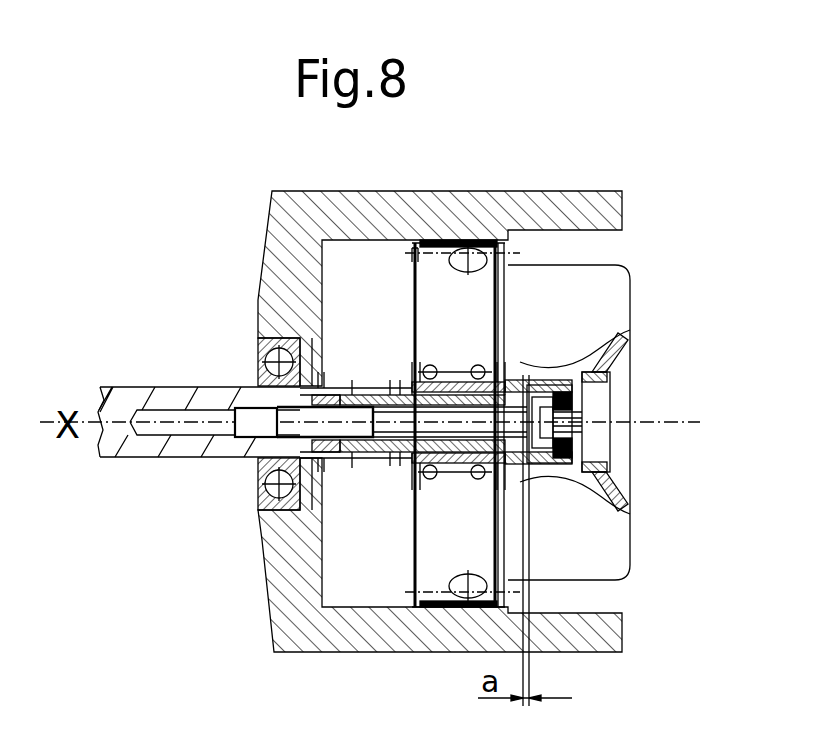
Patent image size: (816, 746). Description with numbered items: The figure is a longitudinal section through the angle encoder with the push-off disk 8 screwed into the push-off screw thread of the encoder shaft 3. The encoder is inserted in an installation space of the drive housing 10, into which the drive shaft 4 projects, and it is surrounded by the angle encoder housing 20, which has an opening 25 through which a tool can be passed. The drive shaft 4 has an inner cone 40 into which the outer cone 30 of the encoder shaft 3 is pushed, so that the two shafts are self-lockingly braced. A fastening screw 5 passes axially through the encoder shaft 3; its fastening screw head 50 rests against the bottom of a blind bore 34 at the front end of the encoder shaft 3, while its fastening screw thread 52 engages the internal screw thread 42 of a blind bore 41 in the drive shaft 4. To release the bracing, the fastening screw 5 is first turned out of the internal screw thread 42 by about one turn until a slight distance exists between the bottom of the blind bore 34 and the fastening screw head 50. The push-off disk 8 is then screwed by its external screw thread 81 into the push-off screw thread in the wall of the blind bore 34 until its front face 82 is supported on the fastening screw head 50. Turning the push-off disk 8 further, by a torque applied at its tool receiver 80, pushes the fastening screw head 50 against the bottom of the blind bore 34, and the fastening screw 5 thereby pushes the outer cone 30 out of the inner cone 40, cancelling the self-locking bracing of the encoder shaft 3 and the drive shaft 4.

The drive housing 10 is at (606, 214).
The angle encoder housing 20 is at (606, 293).
The opening 25 is at (602, 400).
The external screw thread 81 is at (600, 345).
The front face 82 is at (584, 410).
The tool receiver 80 is at (584, 432).
The push-off disk 8 is at (574, 444).
The drive shaft 4 is at (178, 457).
The blind bore 41 is at (160, 415).
The internal screw thread 42 is at (255, 445).
The fastening screw thread 52 is at (268, 403).
The inner cone 40 is at (332, 452).
The encoder shaft 3 is at (393, 455).
The fastening screw 5 is at (400, 410).
The outer cone 30 is at (358, 392).
The fastening screw head 50 is at (538, 392).
The blind bore 34 is at (543, 464).